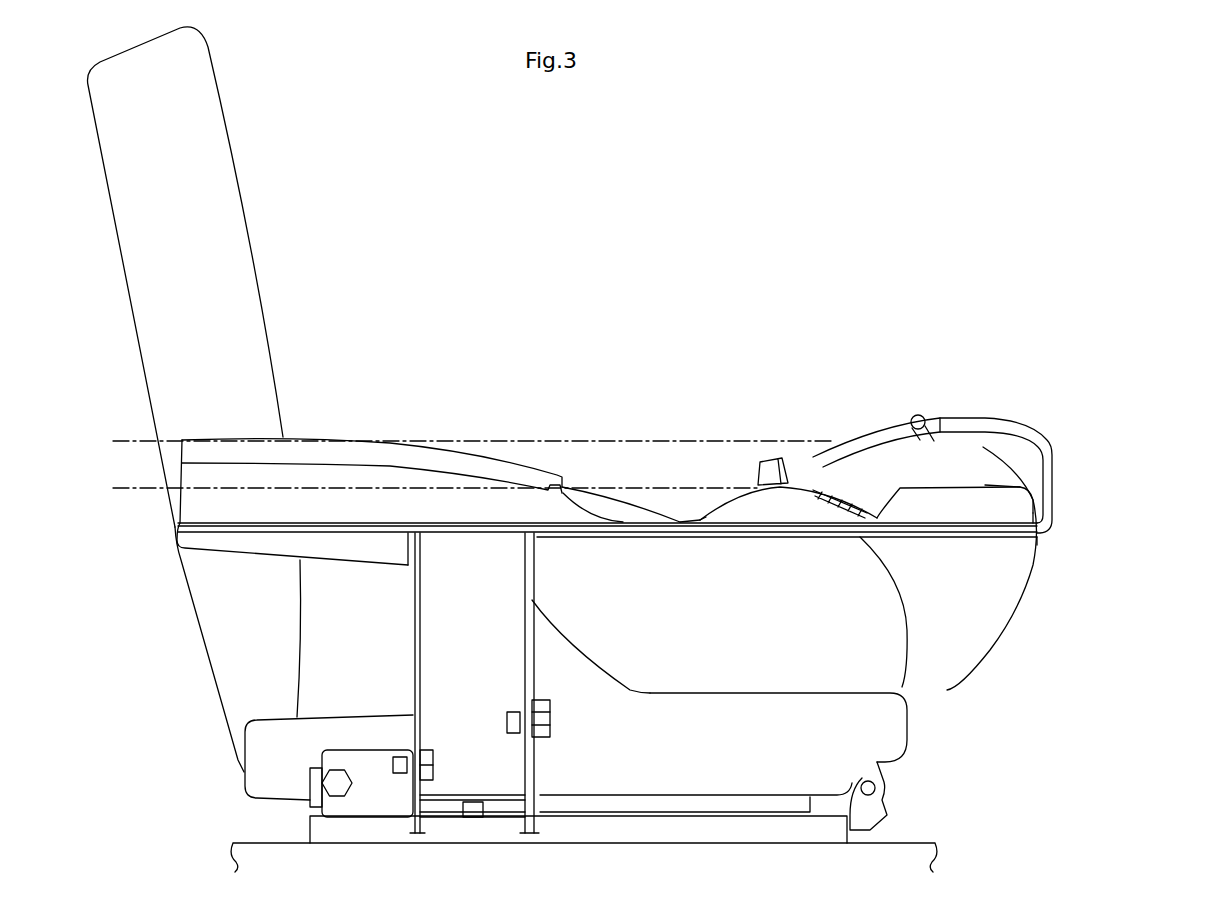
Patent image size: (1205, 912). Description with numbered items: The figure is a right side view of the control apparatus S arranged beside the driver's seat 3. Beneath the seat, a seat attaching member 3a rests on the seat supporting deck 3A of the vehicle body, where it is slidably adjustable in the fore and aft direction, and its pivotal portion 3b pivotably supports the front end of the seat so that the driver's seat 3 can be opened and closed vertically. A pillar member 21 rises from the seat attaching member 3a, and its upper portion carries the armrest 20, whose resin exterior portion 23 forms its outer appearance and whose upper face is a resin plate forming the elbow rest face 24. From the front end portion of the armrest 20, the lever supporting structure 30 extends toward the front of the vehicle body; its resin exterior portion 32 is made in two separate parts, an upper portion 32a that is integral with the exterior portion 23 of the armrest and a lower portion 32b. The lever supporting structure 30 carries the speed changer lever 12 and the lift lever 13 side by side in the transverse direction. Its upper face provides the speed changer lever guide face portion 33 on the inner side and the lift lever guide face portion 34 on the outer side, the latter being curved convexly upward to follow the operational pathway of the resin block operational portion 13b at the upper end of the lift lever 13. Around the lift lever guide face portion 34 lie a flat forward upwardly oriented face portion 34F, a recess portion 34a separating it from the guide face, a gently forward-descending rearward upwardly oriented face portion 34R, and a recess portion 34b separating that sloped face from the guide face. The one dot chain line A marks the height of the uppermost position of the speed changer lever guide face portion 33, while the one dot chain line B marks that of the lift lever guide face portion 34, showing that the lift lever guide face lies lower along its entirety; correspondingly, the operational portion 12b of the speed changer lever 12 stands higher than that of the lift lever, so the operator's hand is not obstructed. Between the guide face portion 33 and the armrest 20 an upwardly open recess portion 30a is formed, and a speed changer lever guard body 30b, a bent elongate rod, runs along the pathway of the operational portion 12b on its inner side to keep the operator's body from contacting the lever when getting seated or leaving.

The driver's seat 3 is at (233, 157).
The seat attaching member 3a is at (695, 812).
The pivotal portion 3b is at (862, 813).
The seat supporting deck 3A is at (920, 842).
The speed changer lever 12 is at (916, 381).
The operational portion of the speed changer lever 12b is at (920, 416).
The lift lever 13 is at (737, 431).
The operational portion of the lift lever 13b is at (762, 465).
The armrest 20 is at (236, 566).
The pillar member 21 is at (413, 678).
The exterior portion of the armrest 23 is at (182, 512).
The elbow rest face 24 is at (353, 437).
The lever supporting structure 30 is at (1006, 649).
The recess portion 30a is at (657, 498).
The speed changer lever guard body 30b is at (1015, 433).
The exterior portion of the lever supporting structure 32 is at (1105, 529).
The upper portion of the exterior portion 32a is at (1025, 508).
The lower portion of the exterior portion 32b is at (1020, 568).
The speed changer lever guide face portion 33 is at (976, 439).
The lift lever guide face portion 34 is at (807, 482).
The recess portion 34a is at (893, 496).
The recess portion 34b is at (691, 514).
The forward upwardly oriented face portion 34F is at (985, 485).
The rearward upwardly oriented face portion 34R is at (620, 497).
The one dot chain line A is at (508, 440).
The one dot chain line B is at (607, 487).
The control apparatus S is at (1028, 286).